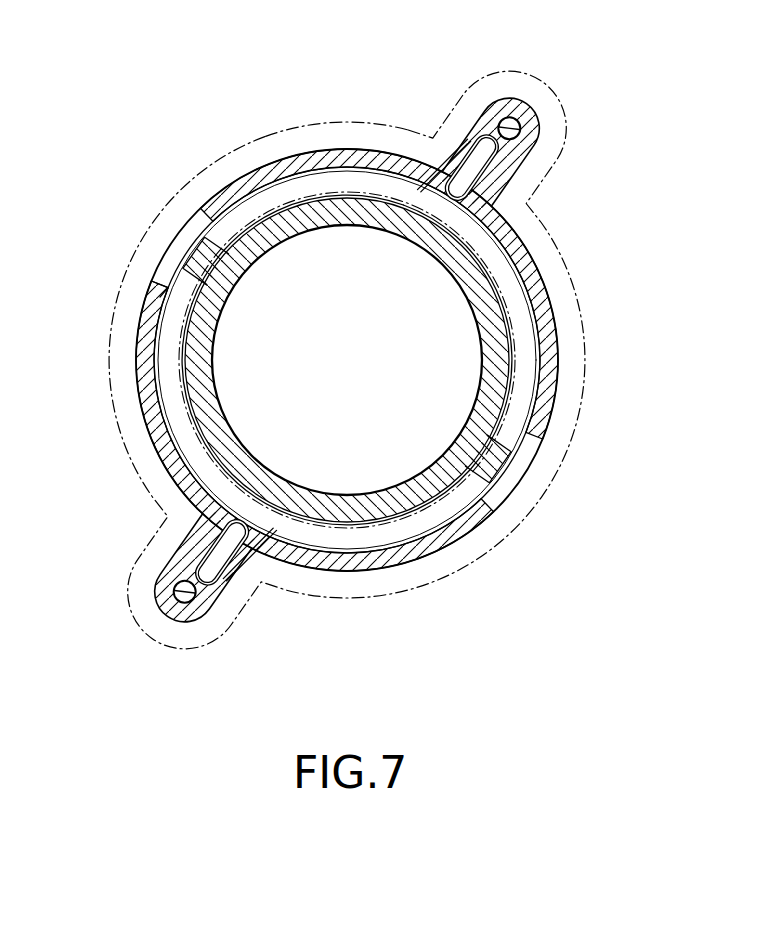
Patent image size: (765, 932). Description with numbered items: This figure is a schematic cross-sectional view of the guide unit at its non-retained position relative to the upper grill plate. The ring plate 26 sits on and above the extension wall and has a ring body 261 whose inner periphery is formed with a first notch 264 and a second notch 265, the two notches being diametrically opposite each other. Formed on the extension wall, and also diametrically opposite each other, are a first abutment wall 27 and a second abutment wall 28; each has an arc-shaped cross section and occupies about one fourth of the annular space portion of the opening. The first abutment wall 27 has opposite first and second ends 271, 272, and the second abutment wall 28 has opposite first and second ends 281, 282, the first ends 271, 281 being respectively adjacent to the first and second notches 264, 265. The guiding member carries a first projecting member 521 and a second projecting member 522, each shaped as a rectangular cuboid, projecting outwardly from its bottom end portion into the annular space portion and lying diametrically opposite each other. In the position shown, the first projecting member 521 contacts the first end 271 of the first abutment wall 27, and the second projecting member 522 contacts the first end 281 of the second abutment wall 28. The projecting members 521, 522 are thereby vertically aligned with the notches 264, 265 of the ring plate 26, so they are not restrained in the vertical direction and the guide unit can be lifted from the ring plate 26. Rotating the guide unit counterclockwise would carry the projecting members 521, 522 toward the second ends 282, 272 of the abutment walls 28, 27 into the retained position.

The ring plate 26 is at (263, 155).
The ring body 261 is at (305, 140).
The first notch 264 is at (160, 297).
The second notch 265 is at (562, 400).
The first abutment wall 27 is at (340, 177).
The first end of first abutment wall 271 is at (225, 235).
The second end of first abutment wall 272 is at (424, 200).
The second abutment wall 28 is at (395, 532).
The first end of second abutment wall 281 is at (467, 493).
The second end of second abutment wall 282 is at (300, 537).
The first projecting member 521 is at (203, 257).
The second projecting member 522 is at (497, 457).